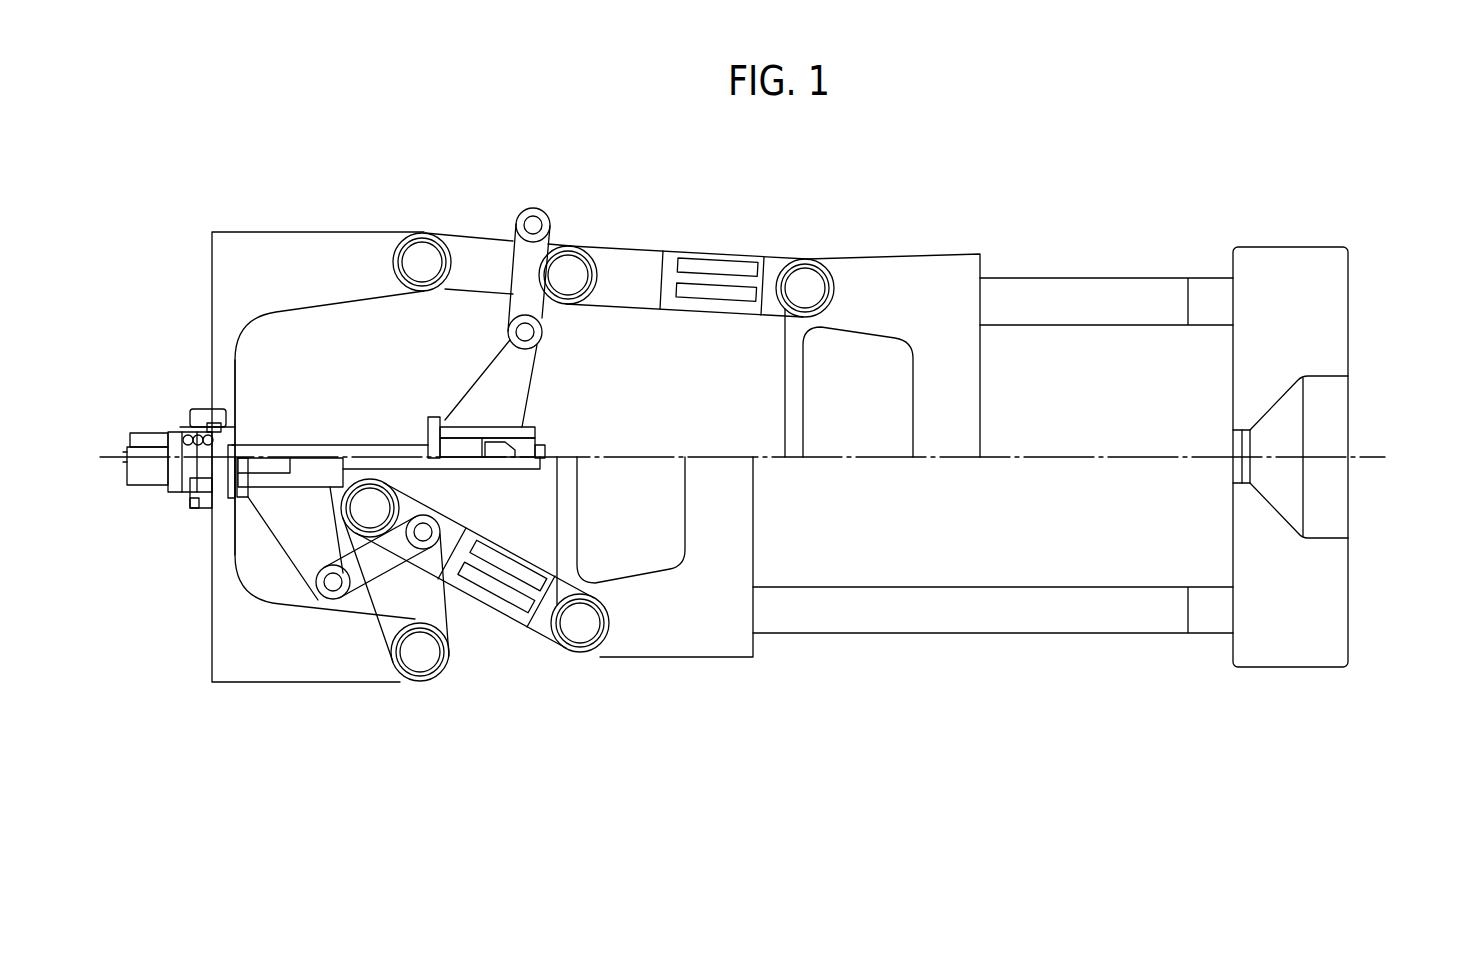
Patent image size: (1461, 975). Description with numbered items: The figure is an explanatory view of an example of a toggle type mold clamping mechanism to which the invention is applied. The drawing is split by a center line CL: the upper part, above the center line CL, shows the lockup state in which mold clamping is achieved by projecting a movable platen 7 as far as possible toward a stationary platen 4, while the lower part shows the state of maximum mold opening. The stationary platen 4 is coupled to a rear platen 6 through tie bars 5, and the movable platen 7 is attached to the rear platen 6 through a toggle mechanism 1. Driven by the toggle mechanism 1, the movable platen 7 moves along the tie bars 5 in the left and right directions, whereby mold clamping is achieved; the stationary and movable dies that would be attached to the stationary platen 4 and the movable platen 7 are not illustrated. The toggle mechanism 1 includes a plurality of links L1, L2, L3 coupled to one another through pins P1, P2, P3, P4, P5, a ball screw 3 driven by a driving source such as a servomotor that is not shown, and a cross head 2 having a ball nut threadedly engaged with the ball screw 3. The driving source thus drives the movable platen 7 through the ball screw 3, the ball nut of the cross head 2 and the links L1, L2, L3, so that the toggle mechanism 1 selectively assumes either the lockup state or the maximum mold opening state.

The toggle mechanism 1 is at (718, 218).
The cross head 2 is at (533, 435).
The ball screw 3 is at (302, 518).
The stationary platen 4 is at (1293, 655).
The tie bars 5 is at (1120, 298).
The rear platen 6 is at (268, 670).
The movable platen 7 is at (918, 277).
The pin P1 is at (577, 282).
The pin P2 is at (418, 258).
The pin P3 is at (810, 282).
The pin P4 is at (517, 345).
The pin P5 is at (540, 222).
The link L1 is at (705, 292).
The link L2 is at (472, 278).
The link L3 is at (530, 282).
The center line CL is at (770, 456).